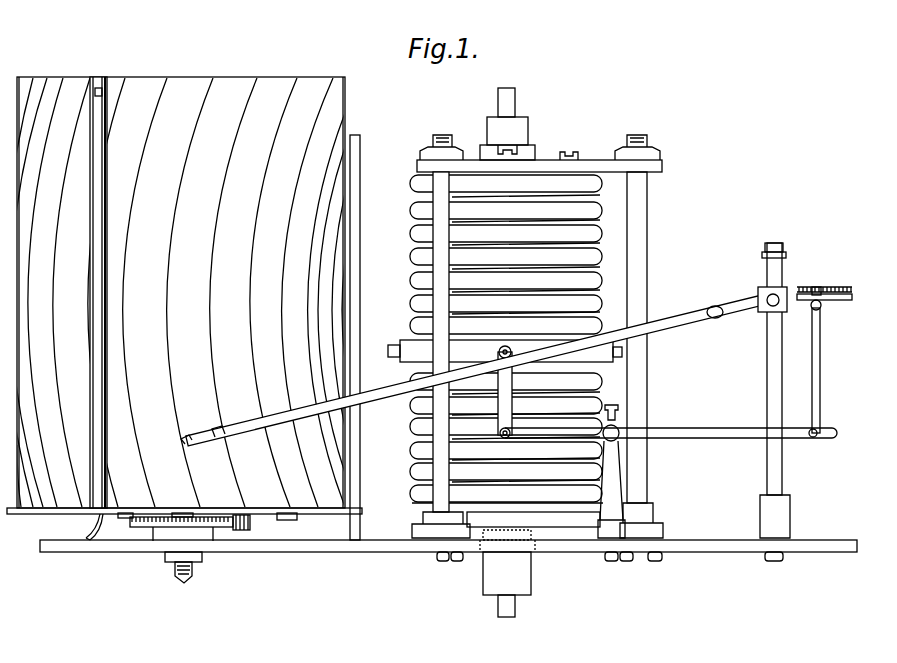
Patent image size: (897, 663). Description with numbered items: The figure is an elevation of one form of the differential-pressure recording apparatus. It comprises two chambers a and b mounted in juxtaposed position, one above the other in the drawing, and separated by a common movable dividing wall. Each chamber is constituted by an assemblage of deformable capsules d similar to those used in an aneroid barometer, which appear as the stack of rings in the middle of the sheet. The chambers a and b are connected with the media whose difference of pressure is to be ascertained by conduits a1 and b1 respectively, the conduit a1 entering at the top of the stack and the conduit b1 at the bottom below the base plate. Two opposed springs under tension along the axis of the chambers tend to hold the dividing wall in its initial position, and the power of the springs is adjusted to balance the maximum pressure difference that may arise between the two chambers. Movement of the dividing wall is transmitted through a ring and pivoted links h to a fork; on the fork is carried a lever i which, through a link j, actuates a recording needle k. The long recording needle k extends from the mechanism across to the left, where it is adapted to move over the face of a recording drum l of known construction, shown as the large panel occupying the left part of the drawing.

The recording drum l is at (183, 309).
The chamber a is at (495, 254).
The chamber b is at (496, 450).
The deformable capsules d is at (598, 278).
The links h is at (500, 412).
The lever i is at (690, 438).
The link j is at (813, 402).
The recording needle k is at (250, 432).
The conduit a1 is at (512, 106).
The conduit b1 is at (516, 606).